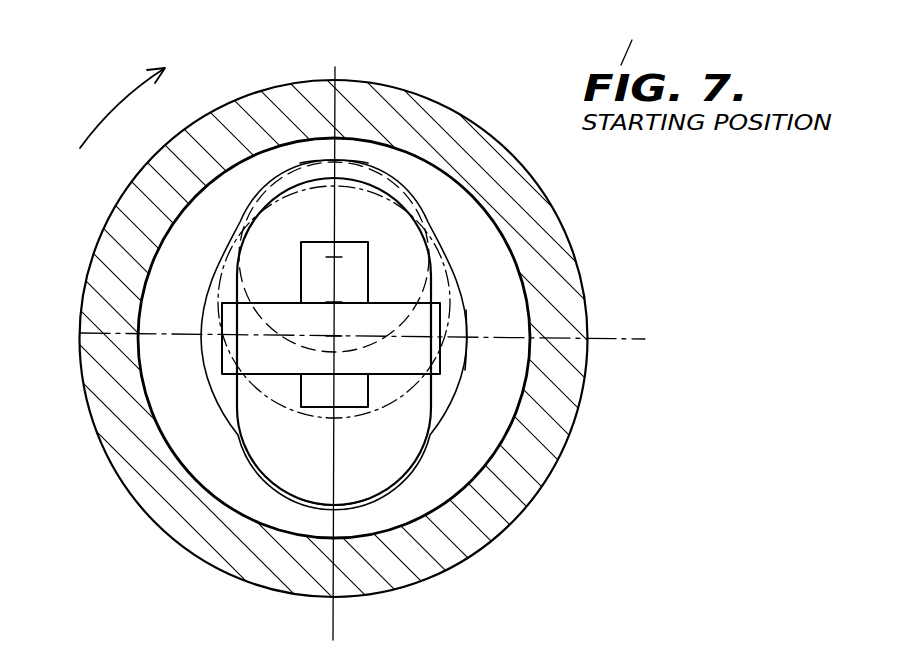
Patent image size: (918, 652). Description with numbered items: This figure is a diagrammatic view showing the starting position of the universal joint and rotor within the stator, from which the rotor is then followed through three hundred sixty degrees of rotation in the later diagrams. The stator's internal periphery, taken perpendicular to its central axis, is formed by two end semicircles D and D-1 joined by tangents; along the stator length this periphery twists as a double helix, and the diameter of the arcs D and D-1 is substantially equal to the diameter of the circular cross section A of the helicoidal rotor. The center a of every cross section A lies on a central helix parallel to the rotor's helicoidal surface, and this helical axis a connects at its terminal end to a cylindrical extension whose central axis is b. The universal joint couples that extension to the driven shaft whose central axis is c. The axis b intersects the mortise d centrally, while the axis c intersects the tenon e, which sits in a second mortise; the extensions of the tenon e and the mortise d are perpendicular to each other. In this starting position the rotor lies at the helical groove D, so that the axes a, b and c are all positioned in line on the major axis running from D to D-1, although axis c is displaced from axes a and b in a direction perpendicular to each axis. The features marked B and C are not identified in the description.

The circular cross section of the rotor A is at (245, 312).
The oval track B is at (440, 247).
The side point of oval track C is at (466, 364).
The end semicircle of the stator D is at (317, 160).
The end semicircle of the stator D-1 is at (337, 505).
The helical axis of the rotor a is at (336, 257).
The central axis of the cylindrical extension b is at (335, 302).
The central axis of the driven shaft c is at (335, 337).
The mortise d is at (440, 367).
The tenon e is at (311, 242).